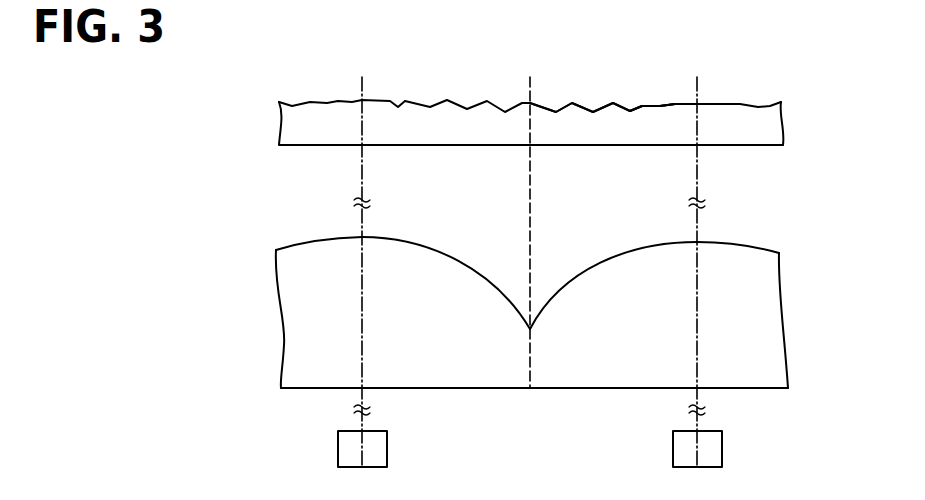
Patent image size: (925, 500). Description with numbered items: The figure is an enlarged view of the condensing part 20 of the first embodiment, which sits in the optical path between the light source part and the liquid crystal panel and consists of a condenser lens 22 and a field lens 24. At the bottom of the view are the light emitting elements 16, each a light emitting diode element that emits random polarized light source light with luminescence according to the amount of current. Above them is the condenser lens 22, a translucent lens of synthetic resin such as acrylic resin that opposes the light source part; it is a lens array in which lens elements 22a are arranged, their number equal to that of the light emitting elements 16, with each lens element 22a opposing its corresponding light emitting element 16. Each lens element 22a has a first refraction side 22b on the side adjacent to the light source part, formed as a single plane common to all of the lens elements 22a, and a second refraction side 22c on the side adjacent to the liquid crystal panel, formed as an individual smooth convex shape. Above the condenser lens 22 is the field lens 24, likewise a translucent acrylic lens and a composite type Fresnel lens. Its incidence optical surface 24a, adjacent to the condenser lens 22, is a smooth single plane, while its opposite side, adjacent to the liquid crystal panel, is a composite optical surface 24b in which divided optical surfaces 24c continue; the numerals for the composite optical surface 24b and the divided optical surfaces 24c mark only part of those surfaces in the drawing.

The light emitting element 16 is at (338, 448).
The condensing part 20 is at (110, 196).
The condenser lens 22 is at (283, 345).
The lens element 22a is at (307, 303).
The first refraction side 22b is at (300, 391).
The second refraction side 22c is at (296, 248).
The field lens 24 is at (277, 123).
The incidence optical surface 24a is at (756, 146).
The composite optical surface 24b is at (697, 62).
The divided optical surface 24c is at (641, 107).